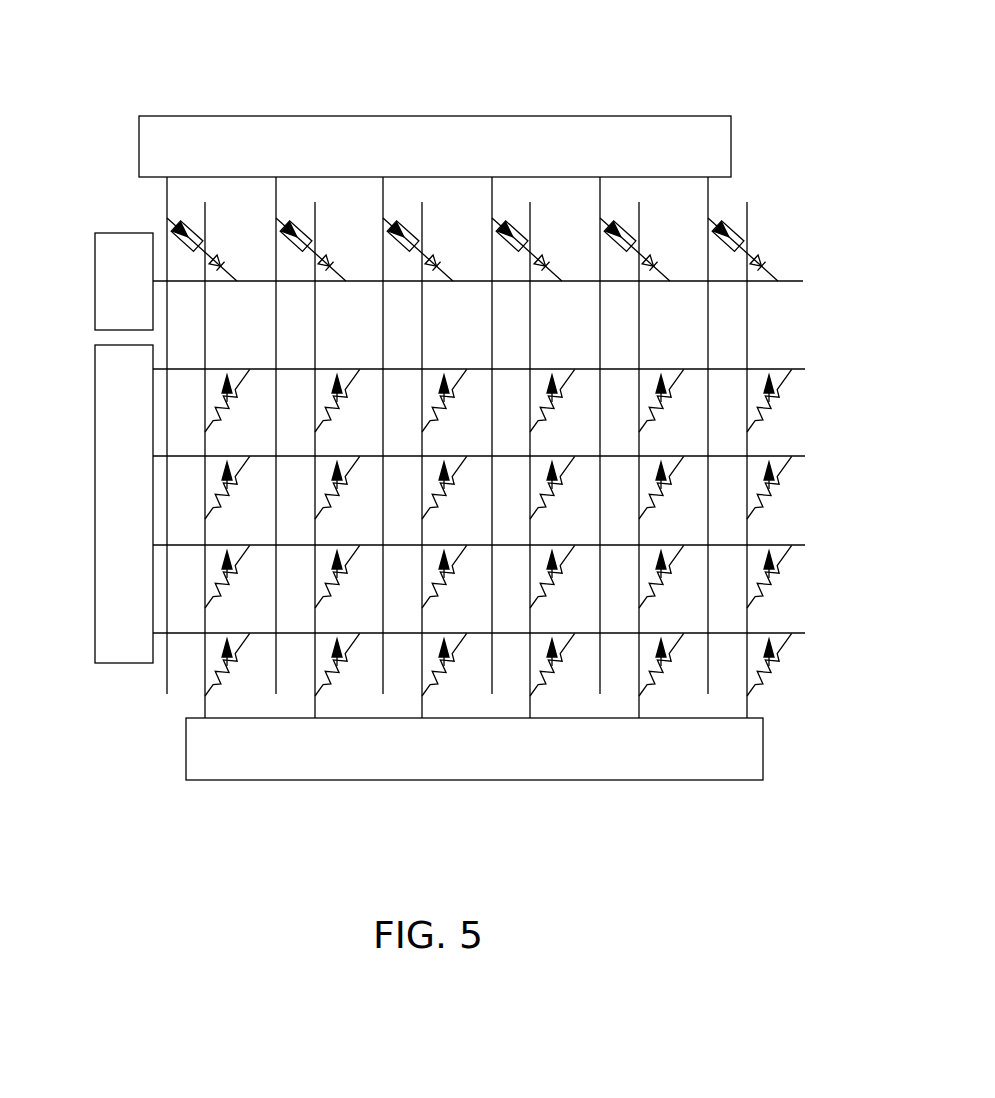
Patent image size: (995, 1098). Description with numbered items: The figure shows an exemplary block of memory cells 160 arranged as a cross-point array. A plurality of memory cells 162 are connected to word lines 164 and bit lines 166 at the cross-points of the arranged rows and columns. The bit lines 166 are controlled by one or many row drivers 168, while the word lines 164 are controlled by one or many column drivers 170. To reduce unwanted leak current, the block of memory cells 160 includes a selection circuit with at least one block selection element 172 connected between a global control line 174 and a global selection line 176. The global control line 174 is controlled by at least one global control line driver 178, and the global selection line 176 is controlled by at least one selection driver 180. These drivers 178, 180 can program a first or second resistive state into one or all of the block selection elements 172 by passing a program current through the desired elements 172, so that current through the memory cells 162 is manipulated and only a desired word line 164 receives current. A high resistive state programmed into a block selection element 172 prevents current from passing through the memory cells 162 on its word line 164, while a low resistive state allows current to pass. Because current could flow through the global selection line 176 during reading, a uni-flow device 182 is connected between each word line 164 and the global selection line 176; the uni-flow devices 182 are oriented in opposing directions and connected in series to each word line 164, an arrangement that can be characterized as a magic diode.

The block of memory cells 160 is at (735, 56).
The memory cell 162 is at (782, 701).
The word line 164 is at (749, 337).
The bit line 166 is at (797, 545).
The row driver 168 is at (93, 455).
The column driver 170 is at (186, 757).
The block selection element 172 is at (774, 228).
The global control line 174 is at (167, 211).
The global selection line 176 is at (795, 281).
The global control line driver 178 is at (290, 116).
The selection driver 180 is at (95, 290).
The uni-flow device 182 is at (776, 249).